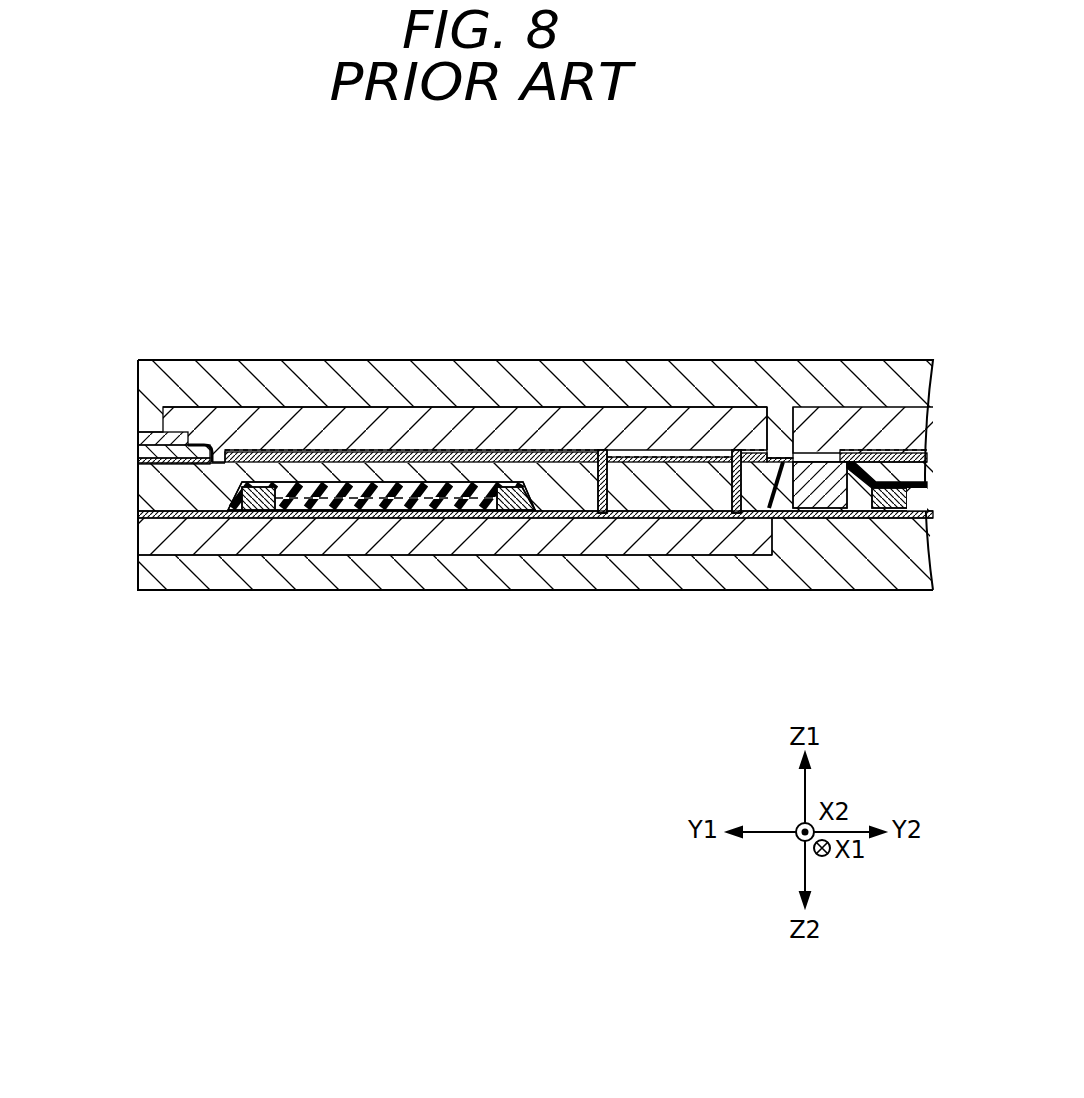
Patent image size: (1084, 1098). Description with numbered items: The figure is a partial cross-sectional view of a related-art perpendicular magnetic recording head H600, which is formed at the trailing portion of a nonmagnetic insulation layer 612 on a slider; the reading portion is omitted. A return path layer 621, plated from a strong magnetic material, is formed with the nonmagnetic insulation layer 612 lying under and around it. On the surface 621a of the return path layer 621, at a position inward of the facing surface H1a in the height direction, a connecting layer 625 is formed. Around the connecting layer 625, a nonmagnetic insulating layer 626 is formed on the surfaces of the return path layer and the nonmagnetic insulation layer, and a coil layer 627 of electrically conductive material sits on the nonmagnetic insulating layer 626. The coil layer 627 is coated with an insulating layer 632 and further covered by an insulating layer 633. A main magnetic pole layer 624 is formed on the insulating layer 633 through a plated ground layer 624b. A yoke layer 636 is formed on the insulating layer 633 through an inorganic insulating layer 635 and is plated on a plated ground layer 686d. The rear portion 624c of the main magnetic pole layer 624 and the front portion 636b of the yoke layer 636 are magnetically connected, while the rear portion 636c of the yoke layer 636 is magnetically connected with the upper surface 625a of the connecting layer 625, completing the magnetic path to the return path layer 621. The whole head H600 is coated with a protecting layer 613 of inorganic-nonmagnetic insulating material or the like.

The magnetic recording head H600 is at (822, 250).
The nonmagnetic insulation layer 612 is at (667, 577).
The protecting layer 613 is at (513, 372).
The return path layer 621 is at (545, 542).
The surface of the return path layer 621a is at (393, 518).
The main magnetic pole layer 624 is at (140, 450).
The plated ground layer 624b is at (183, 470).
The pixel electrode step portion 624c is at (200, 440).
The connecting layer 625 is at (667, 467).
The upper surface of the connecting layer 625a is at (735, 455).
The nonmagnetic insulating layer 626 is at (300, 508).
The coil layer 627 is at (270, 488).
The insulating layer 632 is at (325, 483).
The insulating layer 633 is at (573, 473).
The inorganic insulating layer 635 is at (543, 453).
The yoke layer 636 is at (394, 417).
The front portion of the yoke layer 636b is at (192, 436).
The rear portion of the yoke layer 636c is at (702, 443).
The alignment film 686d is at (450, 448).
The facing surface H1a is at (140, 583).